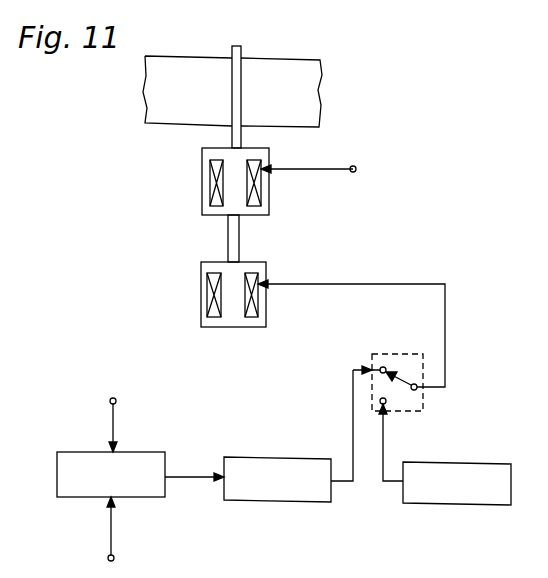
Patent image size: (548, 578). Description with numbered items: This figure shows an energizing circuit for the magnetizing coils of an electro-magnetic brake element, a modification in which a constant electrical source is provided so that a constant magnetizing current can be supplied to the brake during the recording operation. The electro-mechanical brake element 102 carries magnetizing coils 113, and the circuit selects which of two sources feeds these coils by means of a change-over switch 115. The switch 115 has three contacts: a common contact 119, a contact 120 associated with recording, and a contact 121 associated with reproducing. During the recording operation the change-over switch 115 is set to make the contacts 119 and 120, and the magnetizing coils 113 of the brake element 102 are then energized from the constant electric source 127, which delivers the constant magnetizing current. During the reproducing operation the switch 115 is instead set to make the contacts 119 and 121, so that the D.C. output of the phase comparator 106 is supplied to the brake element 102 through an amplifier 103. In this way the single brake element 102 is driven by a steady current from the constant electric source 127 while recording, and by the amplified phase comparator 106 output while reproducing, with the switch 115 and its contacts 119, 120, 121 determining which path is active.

The electro-mechanical brake element 102 is at (248, 318).
The amplifier 103 is at (302, 458).
The phase comparator 106 is at (142, 461).
The magnetizing coils 113 is at (213, 318).
The change-over switch 115 is at (416, 412).
The contact 119 is at (420, 393).
The contact 120 is at (389, 406).
The contact 121 is at (383, 367).
The constant electric source 127 is at (483, 462).